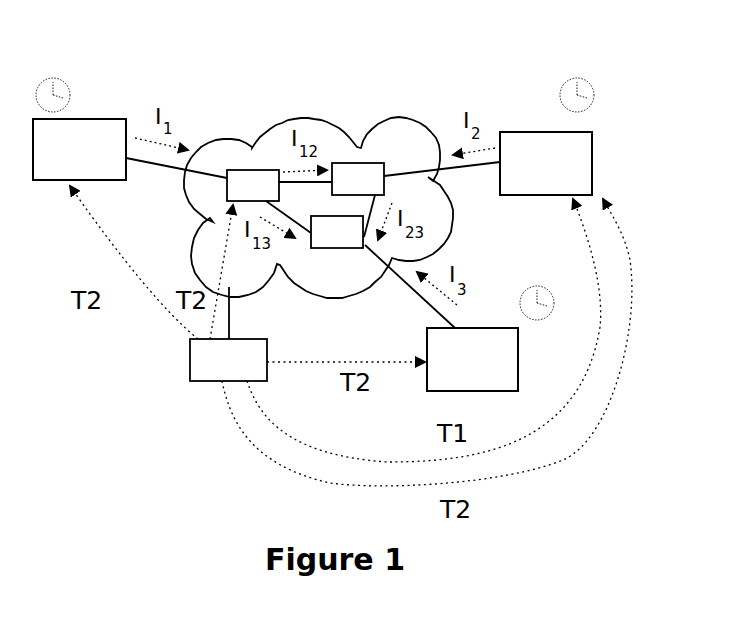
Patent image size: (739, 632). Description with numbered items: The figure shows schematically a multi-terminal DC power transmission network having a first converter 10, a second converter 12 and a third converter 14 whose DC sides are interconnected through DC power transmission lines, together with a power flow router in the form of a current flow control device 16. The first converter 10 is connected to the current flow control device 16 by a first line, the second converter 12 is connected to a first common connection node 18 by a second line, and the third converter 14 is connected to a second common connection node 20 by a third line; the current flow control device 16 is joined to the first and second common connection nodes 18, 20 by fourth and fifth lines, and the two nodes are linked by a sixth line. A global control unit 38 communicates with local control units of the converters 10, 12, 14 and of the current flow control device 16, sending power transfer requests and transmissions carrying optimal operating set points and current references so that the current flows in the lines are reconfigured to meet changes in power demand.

The first converter 10 is at (79, 149).
The second converter 12 is at (546, 163).
The third converter 14 is at (472, 359).
The current flow control (CFC) device 16 is at (248, 184).
The first common connection node 18 is at (366, 174).
The second common connection node 20 is at (338, 235).
The global control unit 38 is at (206, 368).